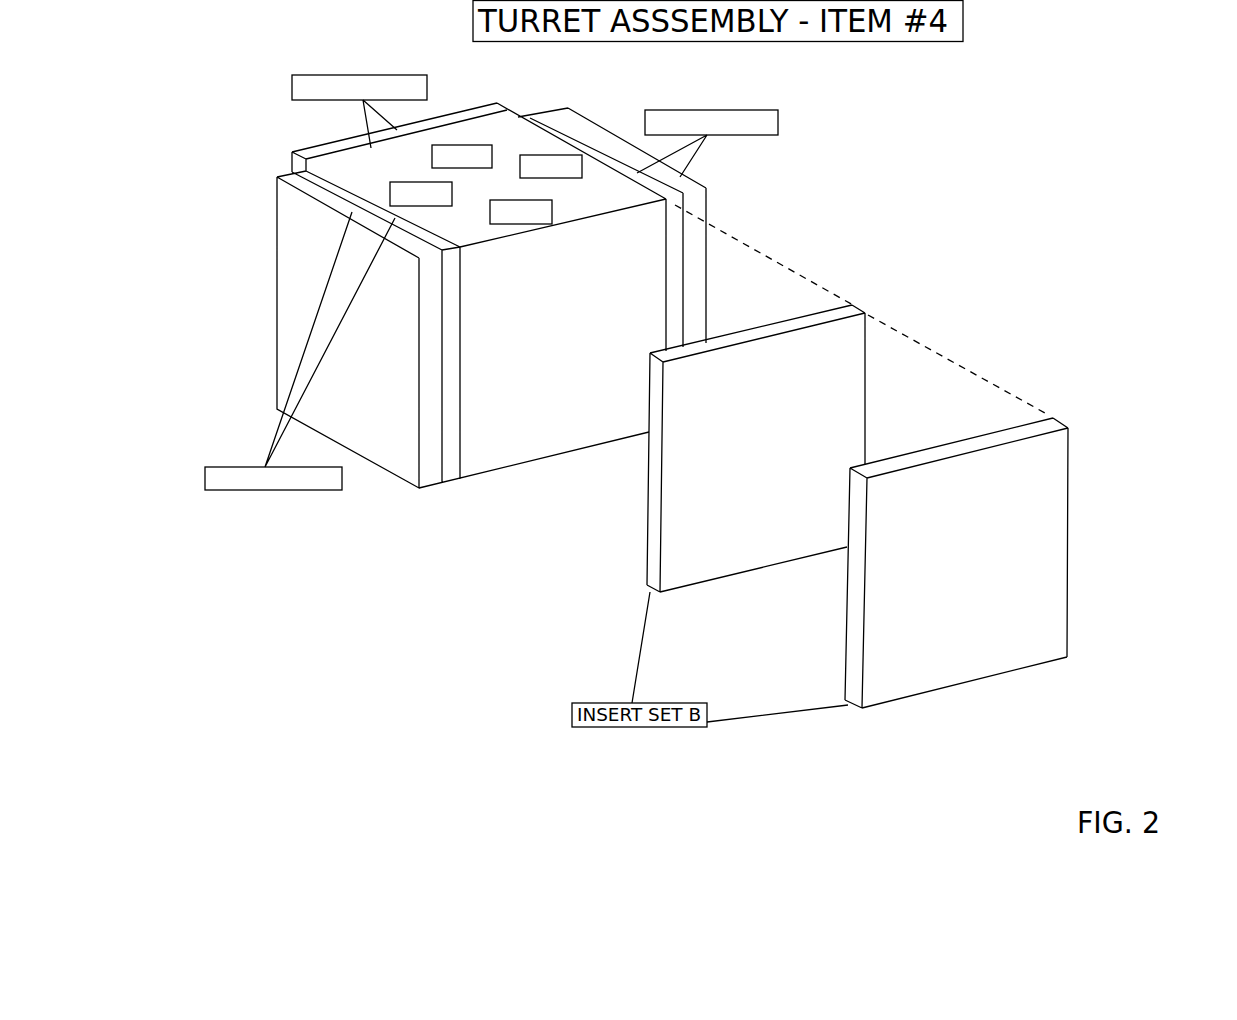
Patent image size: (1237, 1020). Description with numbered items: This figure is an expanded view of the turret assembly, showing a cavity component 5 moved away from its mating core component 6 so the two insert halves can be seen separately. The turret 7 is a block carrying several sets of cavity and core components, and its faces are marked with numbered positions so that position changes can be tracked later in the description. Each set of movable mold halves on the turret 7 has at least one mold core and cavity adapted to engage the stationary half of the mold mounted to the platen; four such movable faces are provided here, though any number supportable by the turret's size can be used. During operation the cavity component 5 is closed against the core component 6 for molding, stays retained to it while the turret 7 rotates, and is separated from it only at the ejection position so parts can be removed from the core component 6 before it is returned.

The cavity component 5 is at (1063, 420).
The core component 6 is at (862, 305).
The turret 7 is at (525, 427).